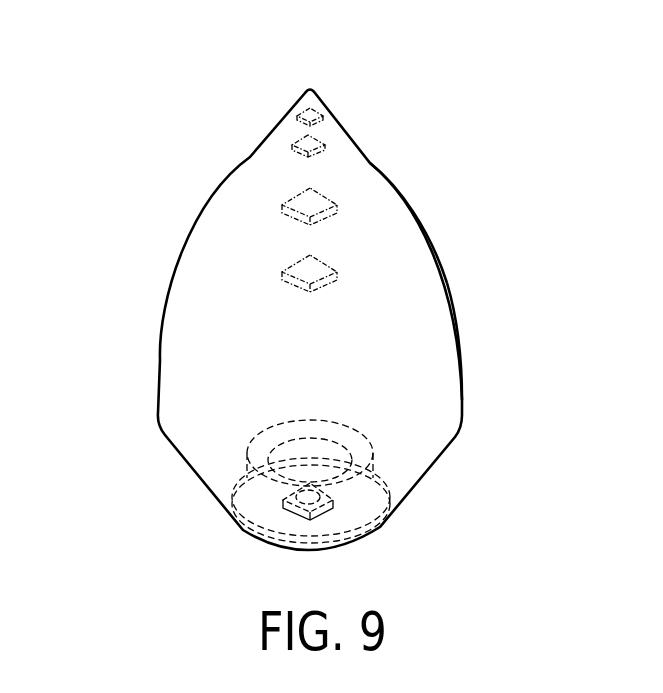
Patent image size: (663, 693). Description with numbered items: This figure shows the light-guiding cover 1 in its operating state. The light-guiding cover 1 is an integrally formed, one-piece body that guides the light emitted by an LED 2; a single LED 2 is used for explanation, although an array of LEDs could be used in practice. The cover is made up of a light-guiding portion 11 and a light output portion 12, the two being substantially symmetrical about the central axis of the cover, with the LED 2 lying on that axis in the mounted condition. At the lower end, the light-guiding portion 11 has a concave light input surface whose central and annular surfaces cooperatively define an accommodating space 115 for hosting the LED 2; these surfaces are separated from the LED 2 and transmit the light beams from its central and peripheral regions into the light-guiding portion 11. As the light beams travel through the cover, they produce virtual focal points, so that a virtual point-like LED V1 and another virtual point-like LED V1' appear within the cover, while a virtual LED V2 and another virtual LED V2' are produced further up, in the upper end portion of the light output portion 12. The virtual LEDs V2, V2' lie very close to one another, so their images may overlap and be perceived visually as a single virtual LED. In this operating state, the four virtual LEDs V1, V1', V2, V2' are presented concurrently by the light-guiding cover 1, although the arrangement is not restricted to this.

The light-guiding cover 1 is at (128, 361).
The light-guiding portion 11 is at (447, 364).
The light output portion 12 is at (398, 209).
The accommodating space 115 is at (263, 505).
The LED 2 is at (340, 508).
The virtual point-like LED V1 is at (348, 178).
The virtual point-like LED V1' is at (352, 300).
The virtual LED V2 is at (348, 84).
The virtual LED V2' is at (354, 123).